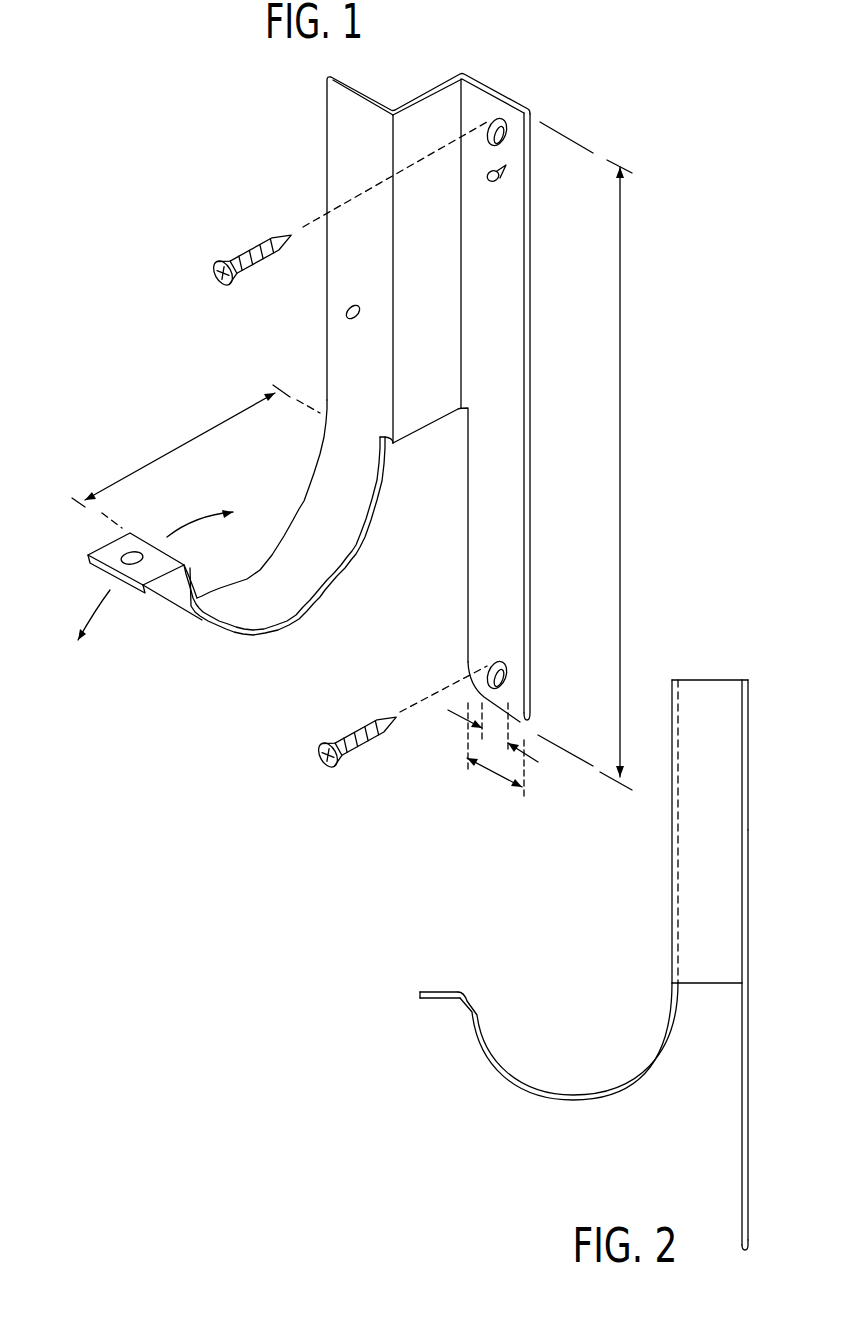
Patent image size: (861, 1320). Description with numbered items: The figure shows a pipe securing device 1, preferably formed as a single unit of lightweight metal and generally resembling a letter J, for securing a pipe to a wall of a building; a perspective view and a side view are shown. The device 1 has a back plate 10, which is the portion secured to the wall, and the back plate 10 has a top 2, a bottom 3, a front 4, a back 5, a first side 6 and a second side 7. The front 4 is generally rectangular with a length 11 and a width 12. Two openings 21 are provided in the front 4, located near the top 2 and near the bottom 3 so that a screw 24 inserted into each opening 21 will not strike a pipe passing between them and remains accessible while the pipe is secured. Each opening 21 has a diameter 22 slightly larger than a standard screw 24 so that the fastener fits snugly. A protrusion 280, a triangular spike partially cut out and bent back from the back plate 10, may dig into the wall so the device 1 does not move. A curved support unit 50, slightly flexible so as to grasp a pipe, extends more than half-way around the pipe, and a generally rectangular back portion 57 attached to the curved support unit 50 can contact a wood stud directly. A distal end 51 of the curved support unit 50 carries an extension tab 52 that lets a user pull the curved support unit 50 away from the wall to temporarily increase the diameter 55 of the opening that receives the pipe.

In FIG. 1, the pipe securing device 1 is at (313, 388).
In FIG. 1, the top 2 is at (494, 84).
In FIG. 2, the top 2 is at (745, 680).
In FIG. 1, the bottom 3 is at (497, 708).
In FIG. 2, the bottom 3 is at (745, 1250).
In FIG. 1, the front 4 is at (505, 580).
In FIG. 2, the front 4 is at (745, 772).
In FIG. 2, the back 5 is at (748, 877).
In FIG. 1, the first side 6 is at (424, 533).
In FIG. 1, the second side 7 is at (528, 497).
In FIG. 2, the second side 7 is at (748, 800).
In FIG. 1, the back plate 10 is at (489, 400).
In FIG. 2, the back plate 10 is at (740, 965).
In FIG. 1, the length 11 is at (628, 470).
In FIG. 1, the width 12 is at (497, 777).
In FIG. 1, the opening 21 is at (505, 134).
In FIG. 1, the diameter 22 is at (533, 763).
In FIG. 1, the screw 24 is at (262, 242).
In FIG. 1, the curved support unit 50 is at (296, 617).
In FIG. 2, the curved support unit 50 is at (577, 1100).
In FIG. 1, the distal end 51 is at (104, 578).
In FIG. 2, the distal end 51 is at (456, 1003).
In FIG. 1, the extension tab 52 is at (112, 550).
In FIG. 2, the extension tab 52 is at (428, 1000).
In FIG. 1, the diameter 55 is at (177, 446).
In FIG. 1, the generally rectangular back portion 57 is at (335, 122).
In FIG. 1, the protrusion 280 is at (497, 180).